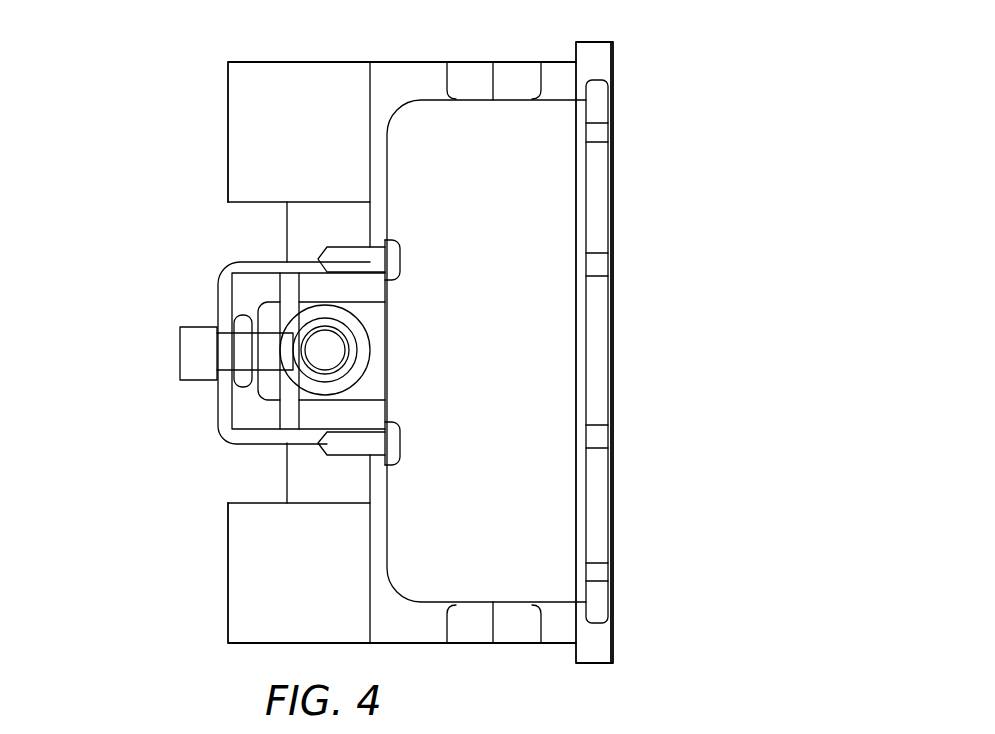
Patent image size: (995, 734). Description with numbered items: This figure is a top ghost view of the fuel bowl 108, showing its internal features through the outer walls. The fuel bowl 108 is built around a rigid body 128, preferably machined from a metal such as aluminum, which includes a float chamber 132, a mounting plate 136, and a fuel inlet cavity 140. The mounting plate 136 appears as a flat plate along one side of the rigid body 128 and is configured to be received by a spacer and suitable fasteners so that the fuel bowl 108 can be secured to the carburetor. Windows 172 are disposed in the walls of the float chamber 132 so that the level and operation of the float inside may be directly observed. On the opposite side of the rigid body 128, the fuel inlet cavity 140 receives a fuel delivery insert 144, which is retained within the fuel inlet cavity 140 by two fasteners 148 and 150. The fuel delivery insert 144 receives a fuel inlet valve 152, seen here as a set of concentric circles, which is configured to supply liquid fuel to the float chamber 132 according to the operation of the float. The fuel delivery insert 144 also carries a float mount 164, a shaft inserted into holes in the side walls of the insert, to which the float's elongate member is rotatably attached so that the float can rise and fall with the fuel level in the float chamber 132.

The fuel bowl 108 is at (661, 103).
The rigid body 128 is at (393, 60).
The float chamber 132 is at (520, 366).
The mounting plate 136 is at (615, 629).
The fuel inlet cavity 140 is at (232, 322).
The fuel delivery insert 144 is at (248, 288).
The fastener 148 is at (320, 253).
The fastener 150 is at (180, 342).
The fuel inlet valve 152 is at (373, 352).
The float mount 164 is at (283, 389).
The windows 172 is at (505, 60).